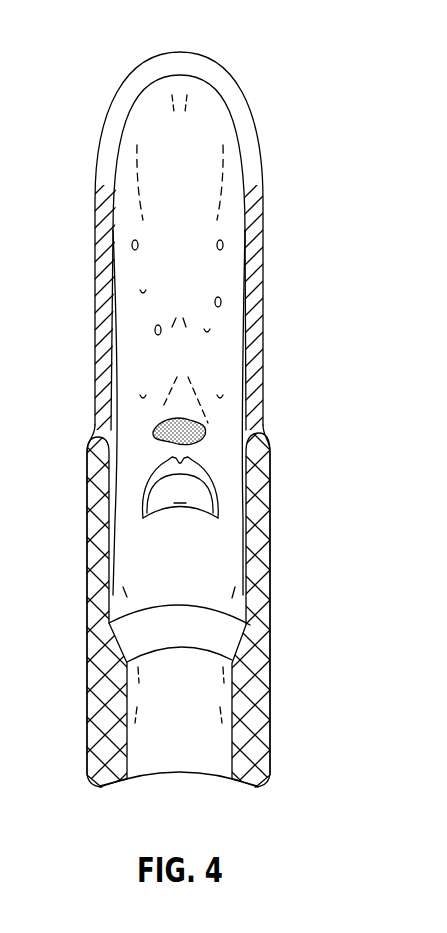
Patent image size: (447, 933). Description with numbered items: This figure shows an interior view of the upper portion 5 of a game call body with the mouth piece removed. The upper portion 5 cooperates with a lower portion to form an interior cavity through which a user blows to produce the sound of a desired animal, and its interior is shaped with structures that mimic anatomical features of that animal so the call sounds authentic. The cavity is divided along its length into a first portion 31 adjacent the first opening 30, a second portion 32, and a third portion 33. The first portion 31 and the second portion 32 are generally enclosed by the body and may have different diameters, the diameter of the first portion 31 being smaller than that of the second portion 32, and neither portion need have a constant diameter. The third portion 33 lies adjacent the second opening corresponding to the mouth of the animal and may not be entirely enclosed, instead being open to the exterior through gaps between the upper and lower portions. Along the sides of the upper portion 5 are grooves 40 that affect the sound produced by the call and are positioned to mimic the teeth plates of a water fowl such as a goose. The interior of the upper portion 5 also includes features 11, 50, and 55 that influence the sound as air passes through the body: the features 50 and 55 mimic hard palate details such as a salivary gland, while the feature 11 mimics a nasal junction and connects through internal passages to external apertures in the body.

The upper portion 5 is at (98, 38).
The grooves 40 is at (255, 243).
The first opening 30 is at (147, 788).
The feature 50 is at (180, 322).
The feature 55 is at (157, 195).
The feature 11 is at (203, 495).
The third portion 33 is at (165, 370).
The second portion 32 is at (165, 593).
The first portion 31 is at (165, 732).